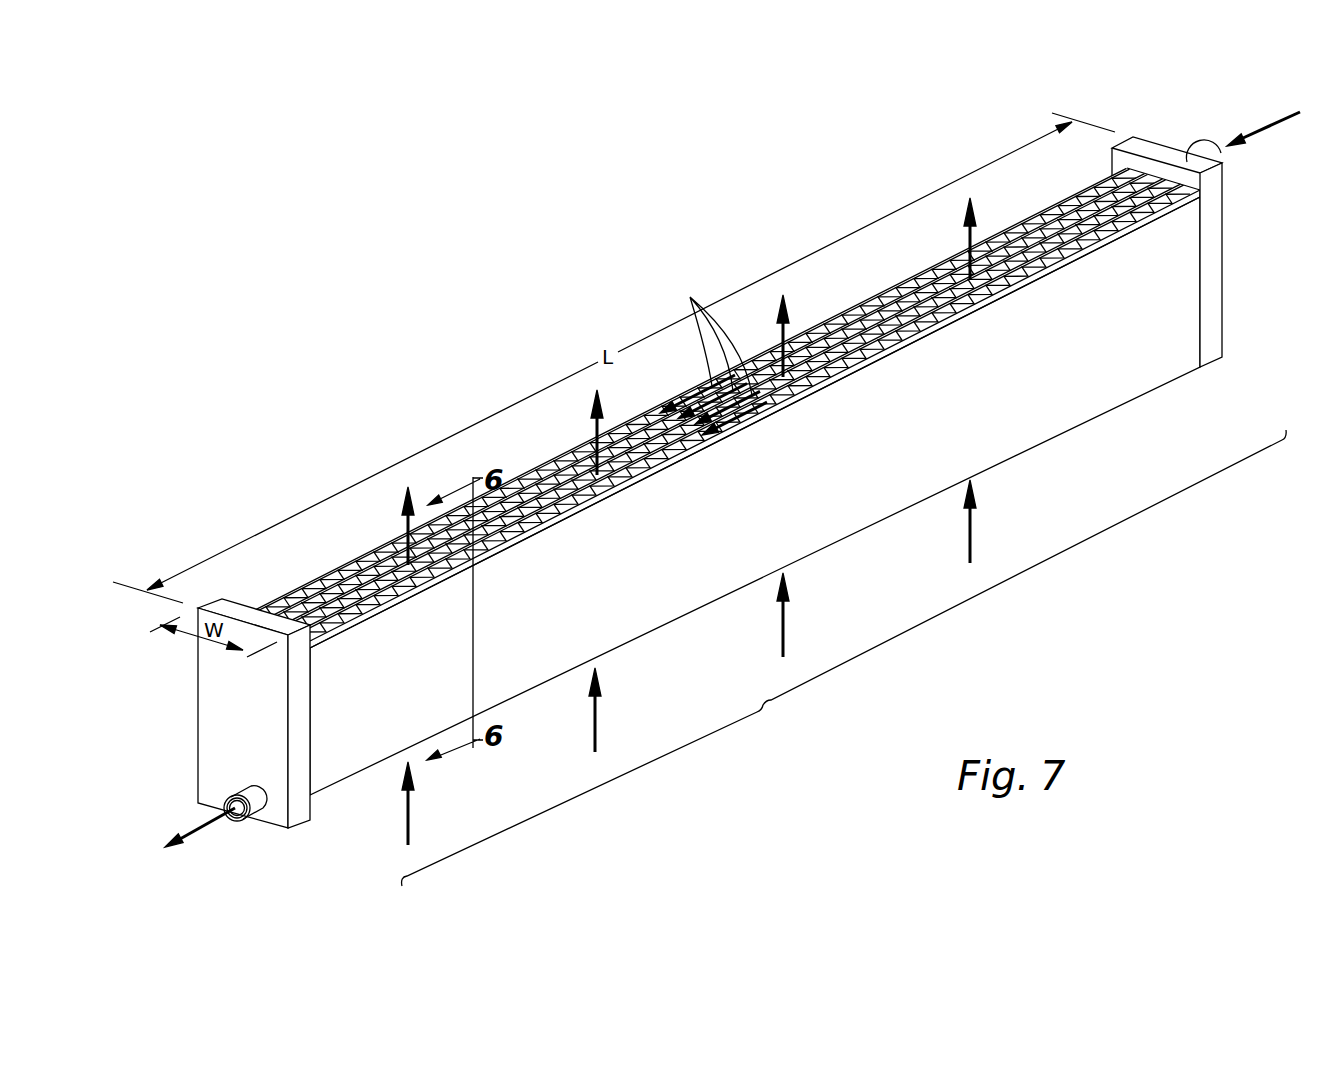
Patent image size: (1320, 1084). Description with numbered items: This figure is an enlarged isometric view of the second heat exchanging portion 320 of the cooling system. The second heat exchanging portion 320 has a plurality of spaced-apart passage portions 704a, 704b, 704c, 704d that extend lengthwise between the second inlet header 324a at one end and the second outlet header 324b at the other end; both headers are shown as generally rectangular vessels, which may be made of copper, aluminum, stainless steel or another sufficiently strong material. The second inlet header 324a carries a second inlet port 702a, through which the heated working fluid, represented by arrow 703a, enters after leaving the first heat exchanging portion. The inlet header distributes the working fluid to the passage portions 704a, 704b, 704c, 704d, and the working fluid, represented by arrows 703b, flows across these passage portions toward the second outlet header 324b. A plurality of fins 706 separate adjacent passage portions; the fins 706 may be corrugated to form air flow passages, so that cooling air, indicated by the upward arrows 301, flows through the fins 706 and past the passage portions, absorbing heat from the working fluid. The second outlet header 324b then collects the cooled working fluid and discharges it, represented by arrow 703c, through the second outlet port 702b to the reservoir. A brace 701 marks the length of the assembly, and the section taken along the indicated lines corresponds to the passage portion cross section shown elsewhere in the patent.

The air flow direction arrows 301 is at (407, 517).
The second heat exchanging portion 320 is at (514, 286).
The second inlet header 324a is at (1137, 147).
The second outlet header 324b is at (210, 697).
The heat exchanger core length 701 is at (764, 708).
The second inlet port 702a is at (1214, 138).
The second outlet port 702b is at (253, 820).
The heated working fluid arrow 703a is at (1273, 133).
The working fluid flow arrow 703b is at (738, 432).
The cooled working fluid arrow 703c is at (199, 838).
The passage portion 704a is at (331, 588).
The passage portion 704b is at (393, 565).
The passage portion 704c is at (527, 507).
The passage portion 704d is at (508, 550).
The fins 706 is at (690, 297).